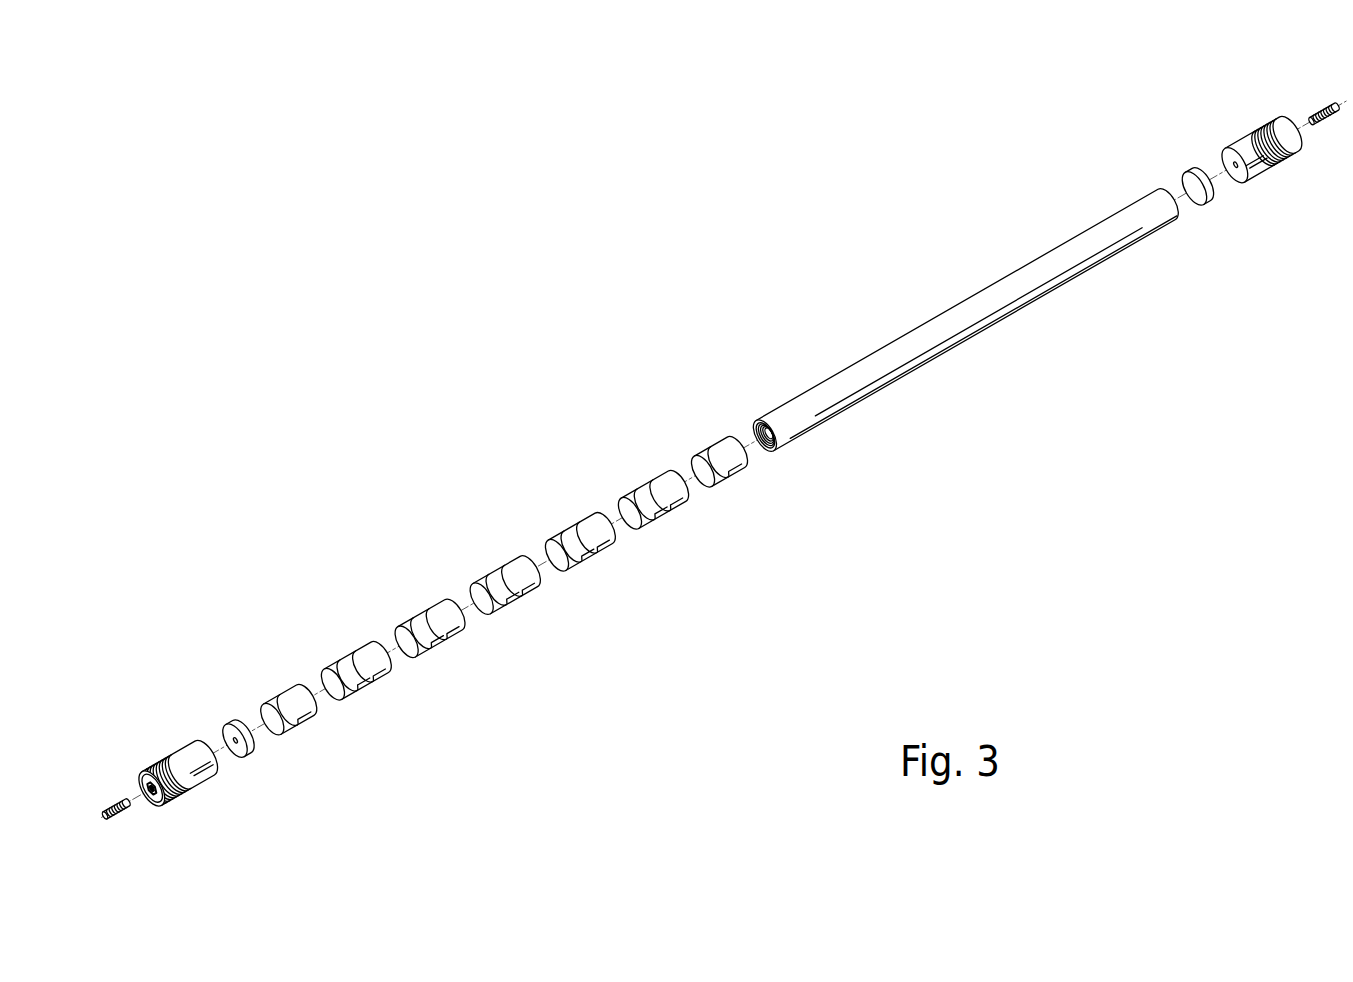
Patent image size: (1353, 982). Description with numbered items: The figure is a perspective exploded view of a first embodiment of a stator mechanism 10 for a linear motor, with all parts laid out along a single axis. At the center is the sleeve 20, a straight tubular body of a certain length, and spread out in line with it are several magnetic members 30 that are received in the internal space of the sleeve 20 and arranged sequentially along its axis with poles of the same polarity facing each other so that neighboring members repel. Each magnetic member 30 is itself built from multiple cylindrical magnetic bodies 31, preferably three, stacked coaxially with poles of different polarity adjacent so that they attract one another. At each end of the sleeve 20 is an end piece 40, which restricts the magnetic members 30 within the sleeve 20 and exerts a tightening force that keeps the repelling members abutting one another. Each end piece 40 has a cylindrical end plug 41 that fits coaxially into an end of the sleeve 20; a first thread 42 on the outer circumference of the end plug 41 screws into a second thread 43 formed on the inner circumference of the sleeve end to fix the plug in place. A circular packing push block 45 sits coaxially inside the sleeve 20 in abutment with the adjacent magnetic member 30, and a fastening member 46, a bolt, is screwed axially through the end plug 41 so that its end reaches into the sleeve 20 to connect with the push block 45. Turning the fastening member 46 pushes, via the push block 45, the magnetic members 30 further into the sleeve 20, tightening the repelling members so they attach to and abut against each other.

The stator mechanism 10 is at (1062, 616).
The sleeve 20 is at (966, 361).
The magnetic member 30 is at (464, 623).
The magnetic body 31 is at (383, 673).
The end piece 40 is at (721, 470).
The end plug 41 is at (704, 461).
The first thread 42 is at (168, 767).
The second thread 43 is at (765, 435).
The push block 45 is at (250, 748).
The fastening member 46 is at (122, 815).